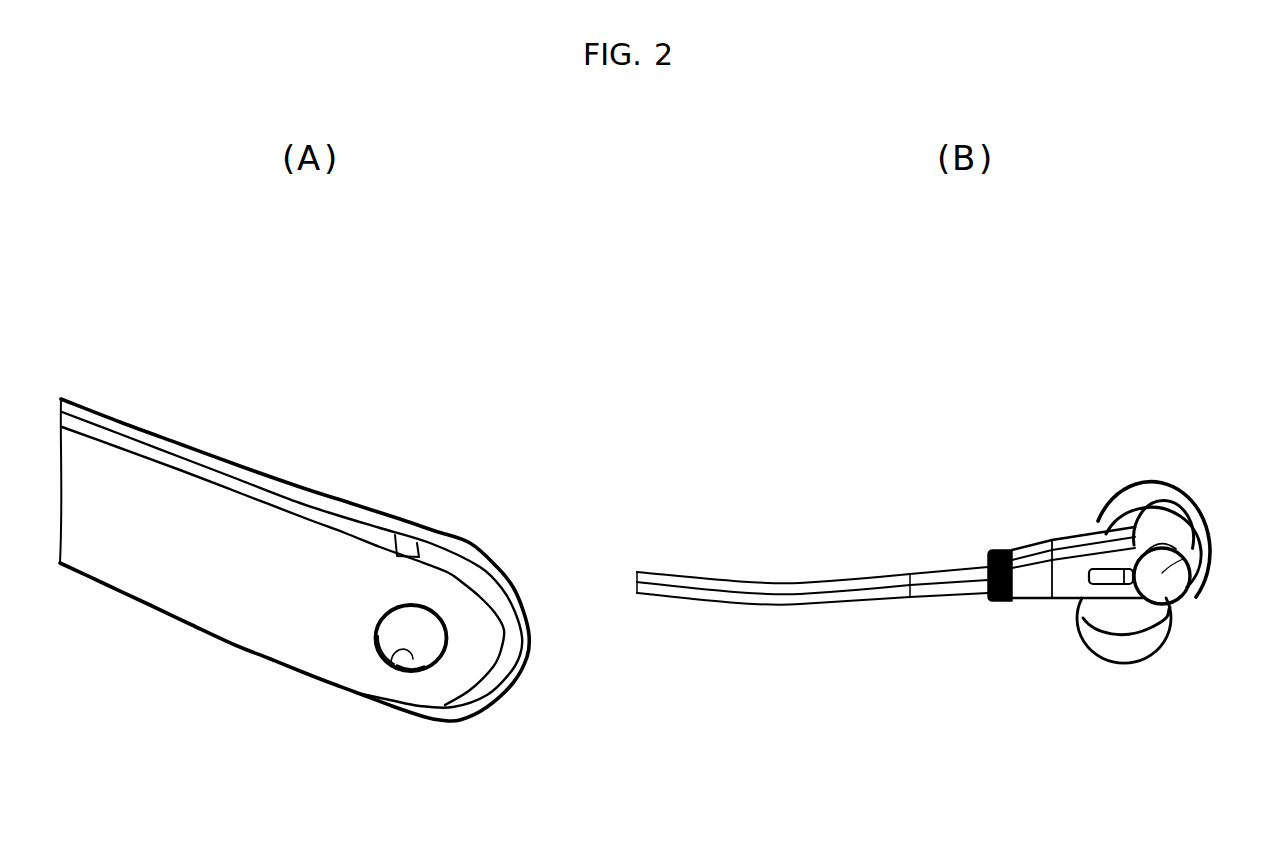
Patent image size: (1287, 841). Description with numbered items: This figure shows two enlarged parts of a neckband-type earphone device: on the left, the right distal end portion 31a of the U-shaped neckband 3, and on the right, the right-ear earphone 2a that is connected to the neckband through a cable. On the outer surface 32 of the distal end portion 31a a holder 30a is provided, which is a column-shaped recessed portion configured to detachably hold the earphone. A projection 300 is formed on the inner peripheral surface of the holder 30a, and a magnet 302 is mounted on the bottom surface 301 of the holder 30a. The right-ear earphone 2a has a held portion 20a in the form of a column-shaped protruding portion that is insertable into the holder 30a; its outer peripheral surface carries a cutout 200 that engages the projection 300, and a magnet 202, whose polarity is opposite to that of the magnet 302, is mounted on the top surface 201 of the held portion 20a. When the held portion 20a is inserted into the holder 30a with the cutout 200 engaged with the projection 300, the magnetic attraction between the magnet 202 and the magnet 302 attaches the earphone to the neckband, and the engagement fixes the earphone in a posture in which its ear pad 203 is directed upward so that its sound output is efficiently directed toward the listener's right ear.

The right-ear earphone 2a is at (1262, 357).
The neckband 3 is at (77, 401).
The held portion 20a is at (1188, 600).
The holder 30a is at (417, 636).
The distal end portion 31a is at (577, 357).
The outer surface 32 is at (160, 507).
The cutout 200 is at (1157, 524).
The top surface 201 is at (1164, 585).
The magnet 202 is at (1200, 515).
The ear pad 203 is at (1083, 613).
The projection 300 is at (384, 665).
The bottom surface 301 is at (423, 647).
The magnet 302 is at (402, 632).